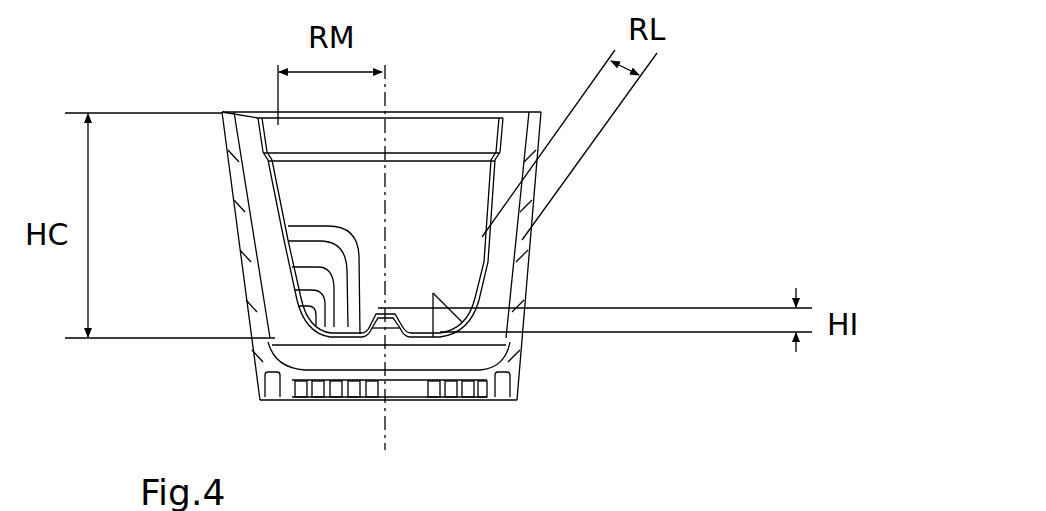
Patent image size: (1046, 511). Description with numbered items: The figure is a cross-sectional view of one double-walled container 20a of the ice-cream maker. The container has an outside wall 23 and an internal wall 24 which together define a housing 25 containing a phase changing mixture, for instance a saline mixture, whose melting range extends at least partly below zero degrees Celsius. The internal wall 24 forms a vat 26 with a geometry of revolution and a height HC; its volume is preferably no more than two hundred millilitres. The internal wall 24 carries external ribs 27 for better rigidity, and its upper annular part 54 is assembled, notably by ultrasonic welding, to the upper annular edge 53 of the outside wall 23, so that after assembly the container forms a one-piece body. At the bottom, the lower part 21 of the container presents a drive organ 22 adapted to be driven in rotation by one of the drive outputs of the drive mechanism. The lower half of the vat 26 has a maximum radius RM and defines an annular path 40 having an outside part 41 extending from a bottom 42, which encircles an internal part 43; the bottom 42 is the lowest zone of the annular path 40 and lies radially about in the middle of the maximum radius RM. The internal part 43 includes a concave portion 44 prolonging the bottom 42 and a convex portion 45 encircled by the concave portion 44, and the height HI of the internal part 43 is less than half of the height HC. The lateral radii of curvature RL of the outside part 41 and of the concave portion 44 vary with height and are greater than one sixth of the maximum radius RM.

The double-walled container 20a is at (590, 220).
The upper annular part 54 is at (232, 113).
The upper annular edge 53 is at (232, 137).
The external ribs 27 is at (265, 175).
The vat 26 is at (440, 281).
The internal wall 24 is at (433, 293).
The convex portion 45 is at (372, 320).
The internal part 43 is at (290, 226).
The concave portion 44 is at (290, 241).
The bottom 42 is at (292, 267).
The annular path 40 is at (296, 290).
The outside part 41 is at (298, 306).
The outside wall 23 is at (530, 240).
The housing 25 is at (493, 297).
The drive organ 22 is at (308, 387).
The lower part 21 is at (445, 402).